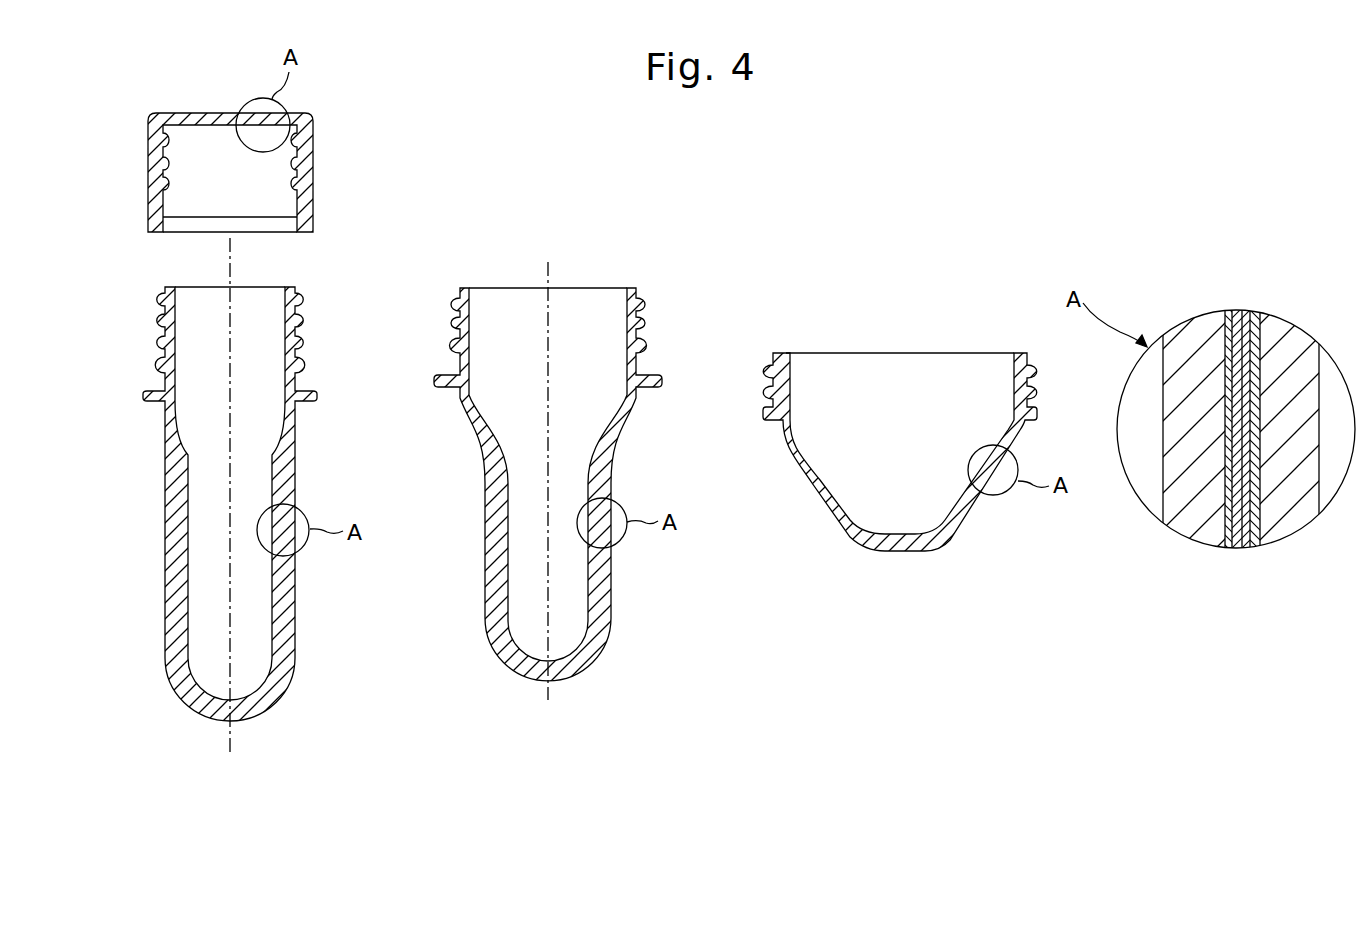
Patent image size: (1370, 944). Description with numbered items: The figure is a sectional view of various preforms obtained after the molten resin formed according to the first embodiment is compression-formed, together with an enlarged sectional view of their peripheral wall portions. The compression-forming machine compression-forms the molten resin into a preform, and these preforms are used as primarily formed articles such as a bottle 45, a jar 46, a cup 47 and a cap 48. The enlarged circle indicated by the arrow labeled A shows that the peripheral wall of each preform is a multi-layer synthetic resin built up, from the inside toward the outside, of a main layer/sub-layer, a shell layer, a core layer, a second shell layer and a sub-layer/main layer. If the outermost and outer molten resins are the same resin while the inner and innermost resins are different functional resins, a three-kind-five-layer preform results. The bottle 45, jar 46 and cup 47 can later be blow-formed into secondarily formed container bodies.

The bottle 45 is at (298, 462).
The jar 46 is at (614, 468).
The cup 47 is at (1021, 438).
The cap 48 is at (315, 162).